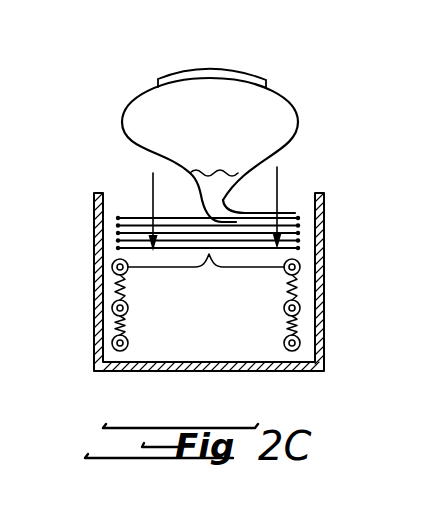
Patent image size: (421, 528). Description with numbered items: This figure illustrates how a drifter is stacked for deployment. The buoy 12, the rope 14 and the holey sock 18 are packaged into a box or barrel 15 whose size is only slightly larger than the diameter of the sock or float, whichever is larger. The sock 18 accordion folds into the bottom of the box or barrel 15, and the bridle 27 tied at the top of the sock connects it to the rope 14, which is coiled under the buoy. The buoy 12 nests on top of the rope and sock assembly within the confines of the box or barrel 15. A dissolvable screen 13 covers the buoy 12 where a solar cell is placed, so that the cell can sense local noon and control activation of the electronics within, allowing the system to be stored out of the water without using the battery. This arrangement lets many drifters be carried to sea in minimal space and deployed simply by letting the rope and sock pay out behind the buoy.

The buoy 12 is at (130, 105).
The dissolvable screen 13 is at (172, 75).
The rope 14 is at (118, 216).
The box or barrel 15 is at (93, 213).
The holey sock 18 is at (113, 288).
The bridle 27 is at (247, 268).